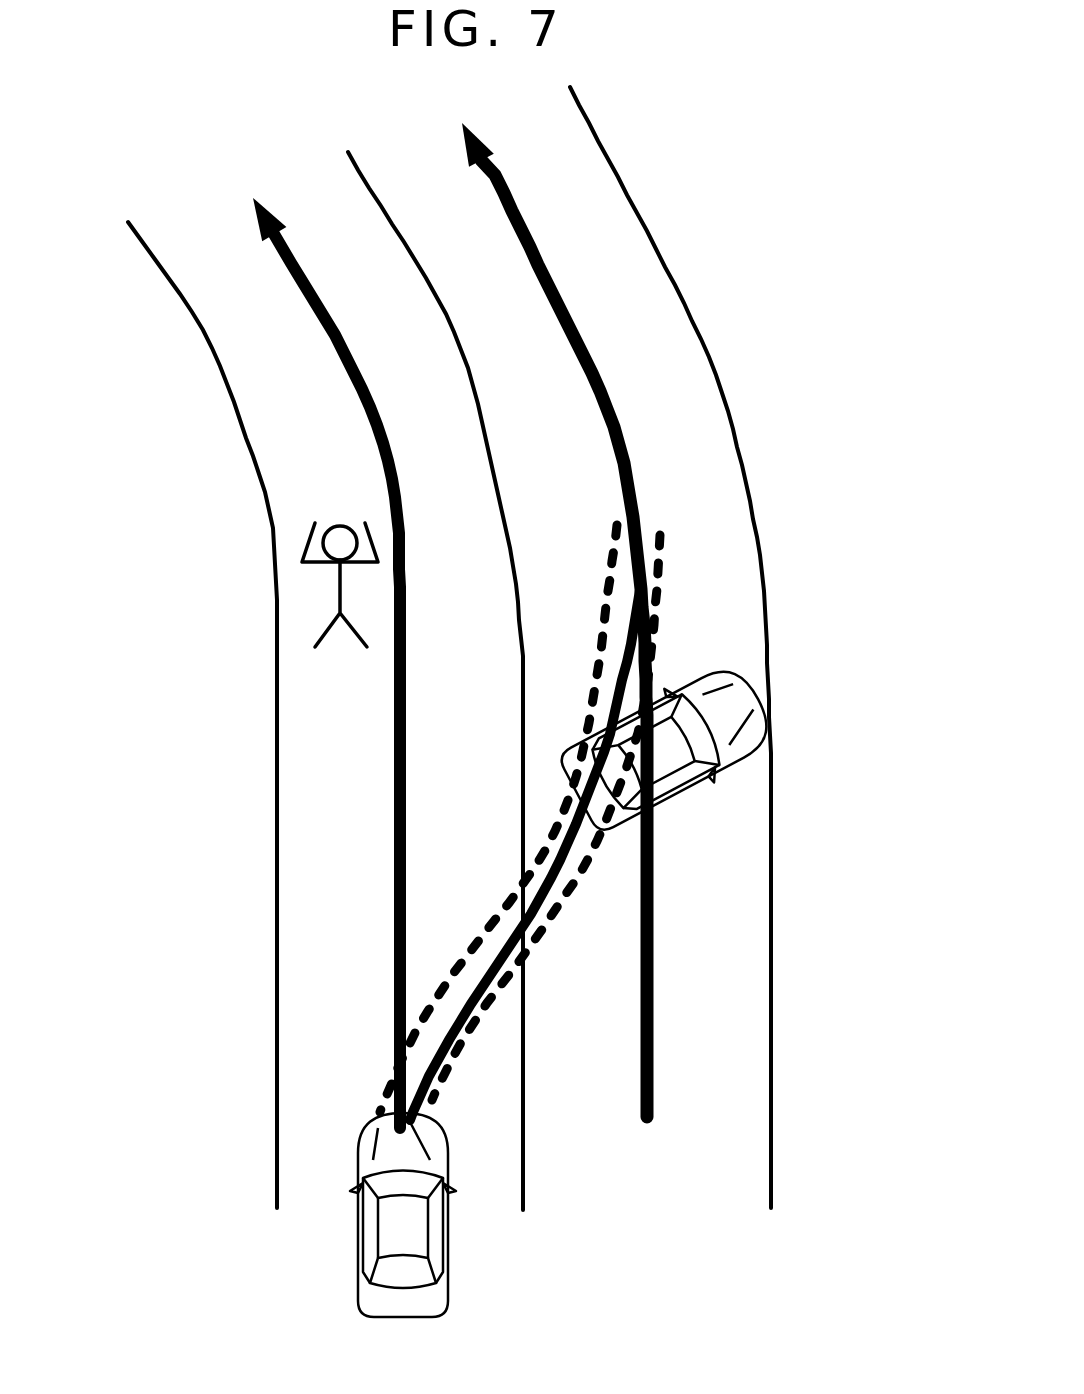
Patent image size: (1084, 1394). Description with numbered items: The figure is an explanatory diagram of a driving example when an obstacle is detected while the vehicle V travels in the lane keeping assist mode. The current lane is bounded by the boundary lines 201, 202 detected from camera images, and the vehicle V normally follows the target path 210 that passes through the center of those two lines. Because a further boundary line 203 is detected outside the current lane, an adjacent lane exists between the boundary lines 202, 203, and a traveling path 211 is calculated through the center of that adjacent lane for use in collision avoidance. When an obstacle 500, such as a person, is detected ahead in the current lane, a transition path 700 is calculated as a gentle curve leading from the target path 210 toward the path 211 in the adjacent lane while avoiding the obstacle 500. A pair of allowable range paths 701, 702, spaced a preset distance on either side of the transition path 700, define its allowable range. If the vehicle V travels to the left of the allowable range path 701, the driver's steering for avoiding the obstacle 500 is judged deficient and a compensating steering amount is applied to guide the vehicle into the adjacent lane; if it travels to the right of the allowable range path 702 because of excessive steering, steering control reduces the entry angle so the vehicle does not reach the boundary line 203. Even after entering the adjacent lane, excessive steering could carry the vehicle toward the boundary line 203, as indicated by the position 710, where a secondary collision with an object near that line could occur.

The boundary line 201 is at (276, 978).
The boundary line 202 is at (521, 613).
The boundary line 203 is at (773, 1040).
The target path 210 is at (393, 770).
The traveling path 211 is at (628, 452).
The obstacle 500 is at (338, 523).
The transition path 700 is at (548, 895).
The allowable range path 701 is at (492, 916).
The allowable range path 702 is at (496, 998).
The position of vehicle after excessive steering 710 is at (722, 673).
The vehicle V is at (360, 1140).